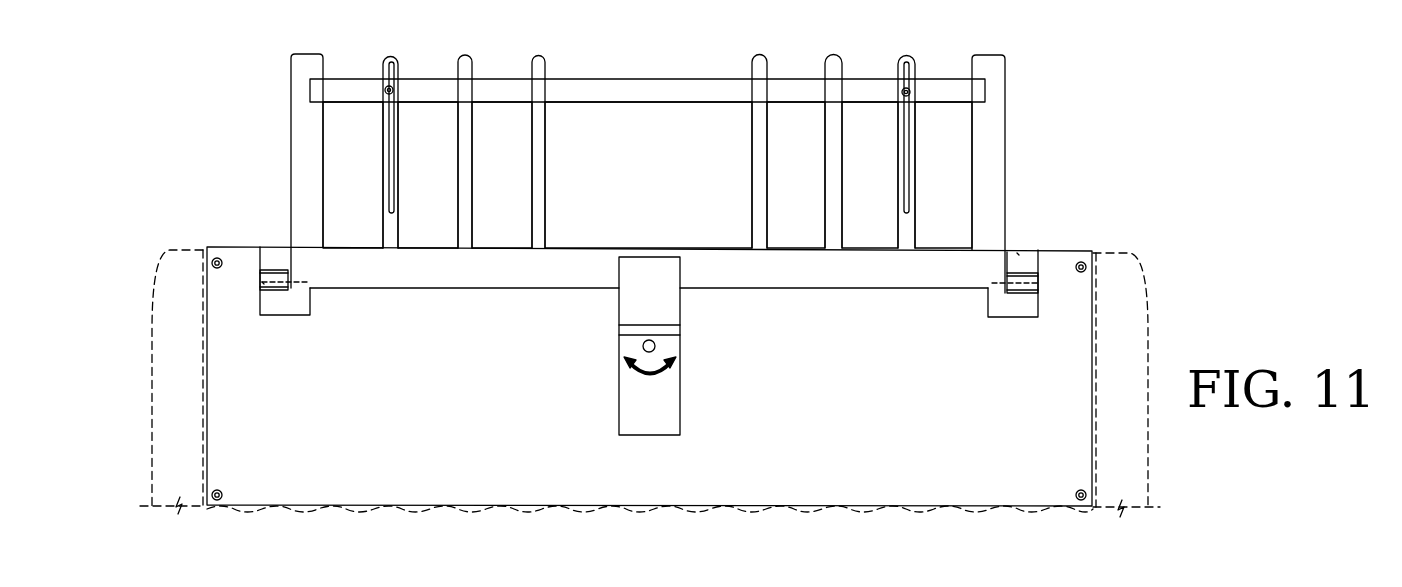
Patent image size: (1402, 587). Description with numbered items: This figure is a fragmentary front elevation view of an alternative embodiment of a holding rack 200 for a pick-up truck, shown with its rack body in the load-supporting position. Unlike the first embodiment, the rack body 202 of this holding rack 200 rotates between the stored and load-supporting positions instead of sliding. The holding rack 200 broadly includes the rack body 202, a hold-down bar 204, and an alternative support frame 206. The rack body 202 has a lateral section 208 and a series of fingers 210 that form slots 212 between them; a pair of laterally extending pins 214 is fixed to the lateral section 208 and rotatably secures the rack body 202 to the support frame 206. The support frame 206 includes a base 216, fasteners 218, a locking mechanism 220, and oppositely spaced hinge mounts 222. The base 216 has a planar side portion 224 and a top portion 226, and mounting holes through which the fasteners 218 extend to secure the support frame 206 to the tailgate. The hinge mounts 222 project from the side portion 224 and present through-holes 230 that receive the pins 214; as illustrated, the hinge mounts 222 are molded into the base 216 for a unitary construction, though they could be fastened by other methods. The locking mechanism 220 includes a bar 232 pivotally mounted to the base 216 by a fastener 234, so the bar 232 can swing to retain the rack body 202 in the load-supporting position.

The holding rack 200 is at (1195, 117).
The rack body 202 is at (995, 142).
The hold-down bar 204 is at (588, 91).
The support frame 206 is at (1070, 340).
The lateral section 208 is at (705, 262).
The fingers 210 is at (537, 208).
The slots 212 is at (550, 135).
The pins 214 is at (305, 283).
The base 216 is at (1068, 264).
The fasteners 218 is at (1086, 267).
The locking mechanism 220 is at (619, 405).
The hinge mounts 222 is at (287, 304).
The side portion 224 is at (1080, 430).
The top portion 226 is at (1015, 253).
The through-holes 230 is at (262, 282).
The bar 232 is at (653, 407).
The fastener 234 is at (656, 343).